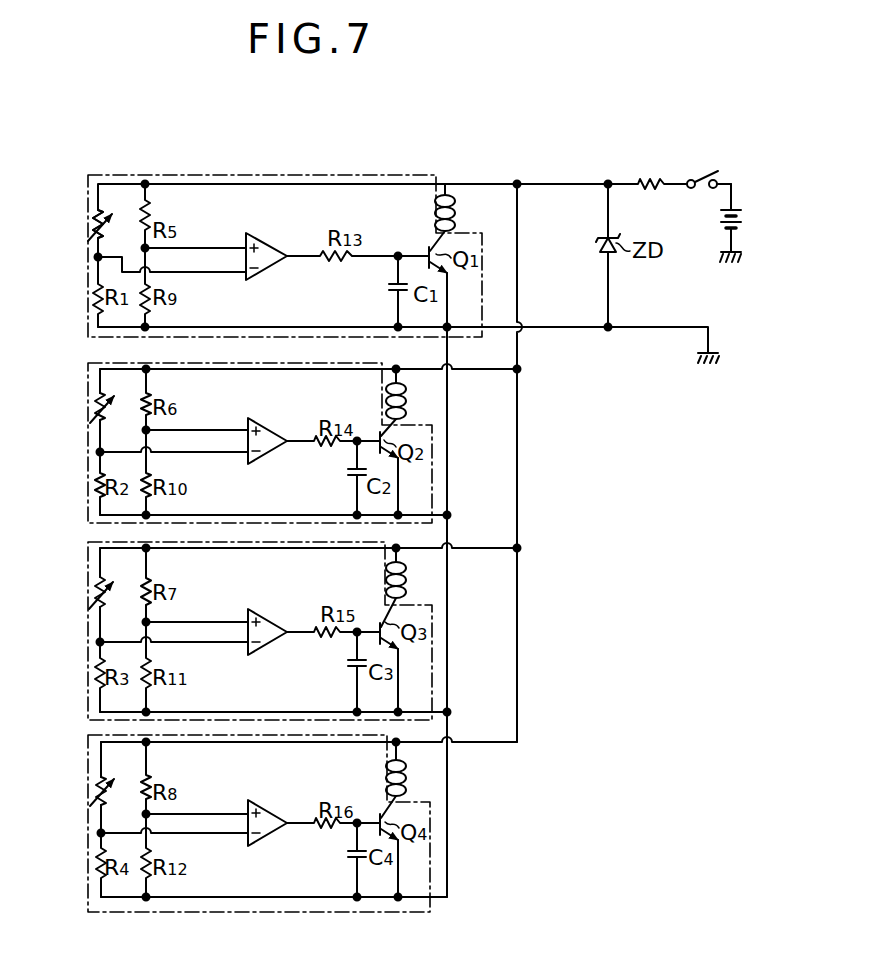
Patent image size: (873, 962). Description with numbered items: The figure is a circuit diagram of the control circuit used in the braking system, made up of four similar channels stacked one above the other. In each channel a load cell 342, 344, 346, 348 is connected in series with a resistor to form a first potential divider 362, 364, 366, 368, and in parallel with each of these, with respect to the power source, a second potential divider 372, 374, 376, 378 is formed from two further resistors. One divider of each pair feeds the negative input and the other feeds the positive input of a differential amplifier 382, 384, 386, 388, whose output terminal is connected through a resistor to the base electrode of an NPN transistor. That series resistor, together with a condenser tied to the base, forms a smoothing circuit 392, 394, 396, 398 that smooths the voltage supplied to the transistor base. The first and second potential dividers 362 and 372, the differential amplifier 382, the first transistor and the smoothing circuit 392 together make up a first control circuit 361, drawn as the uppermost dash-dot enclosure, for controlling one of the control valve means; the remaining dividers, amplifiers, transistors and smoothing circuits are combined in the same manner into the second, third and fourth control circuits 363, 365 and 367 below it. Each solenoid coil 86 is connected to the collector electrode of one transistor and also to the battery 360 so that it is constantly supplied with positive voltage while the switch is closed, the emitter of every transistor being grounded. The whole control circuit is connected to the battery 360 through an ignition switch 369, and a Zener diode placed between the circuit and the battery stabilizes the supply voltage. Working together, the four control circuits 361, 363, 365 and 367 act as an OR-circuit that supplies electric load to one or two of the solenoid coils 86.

The first control circuit 361 is at (350, 174).
The first potential divider 362 is at (86, 266).
The second control circuit 363 is at (378, 363).
The first potential divider 364 is at (86, 446).
The third control circuit 365 is at (386, 541).
The first potential divider 366 is at (86, 646).
The fourth control circuit 367 is at (412, 735).
The first potential divider 368 is at (86, 851).
The ignition switch 369 is at (700, 176).
The battery 360 is at (742, 225).
The second potential divider 372 is at (187, 241).
The second potential divider 374 is at (168, 438).
The second potential divider 376 is at (178, 614).
The second potential divider 378 is at (166, 812).
The differential amplifier 382 is at (264, 243).
The differential amplifier 384 is at (258, 429).
The differential amplifier 386 is at (265, 620).
The differential amplifier 388 is at (278, 804).
The smoothing circuit 392 is at (384, 245).
The smoothing circuit 394 is at (356, 428).
The smoothing circuit 396 is at (379, 611).
The smoothing circuit 398 is at (359, 812).
The load cell 342 is at (96, 226).
The load cell 344 is at (96, 403).
The load cell 346 is at (96, 583).
The load cell 348 is at (96, 790).
The solenoid coil 86 is at (455, 212).